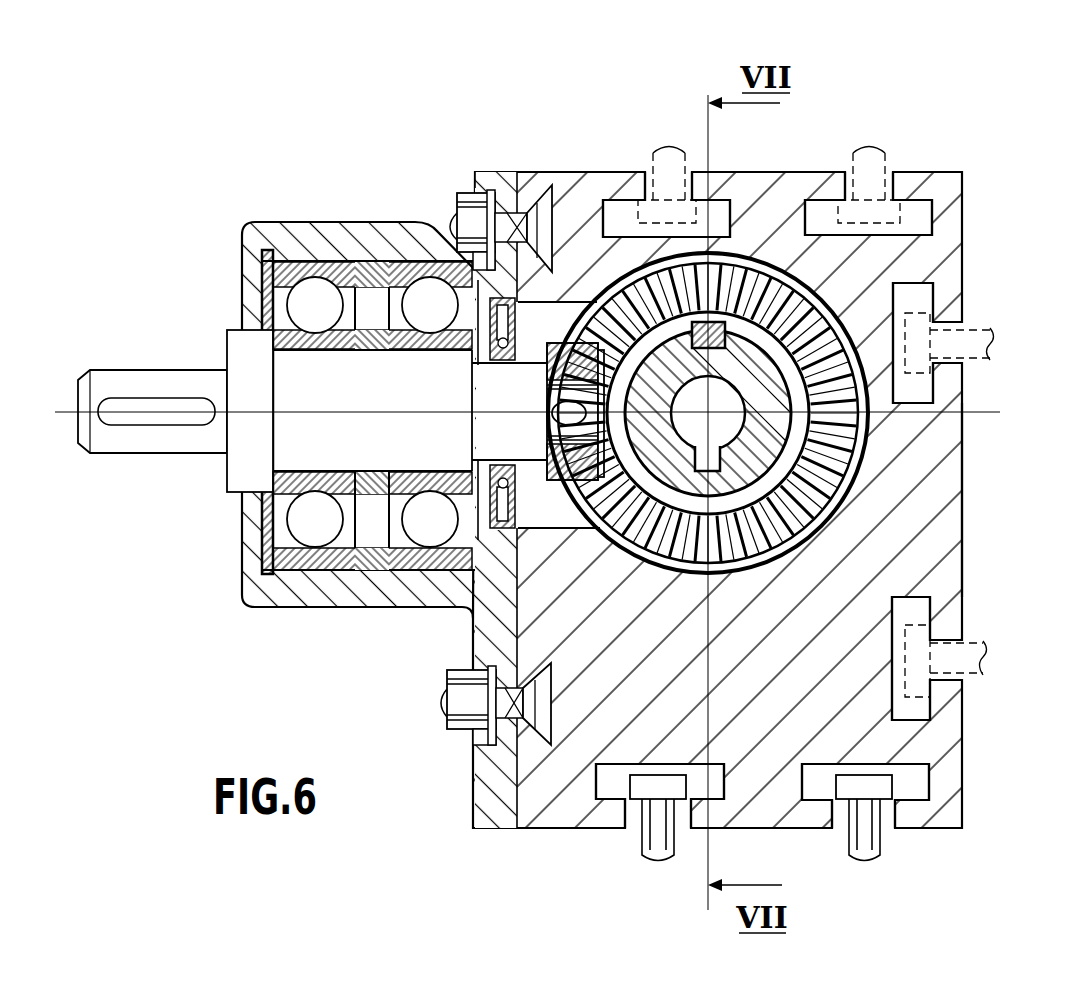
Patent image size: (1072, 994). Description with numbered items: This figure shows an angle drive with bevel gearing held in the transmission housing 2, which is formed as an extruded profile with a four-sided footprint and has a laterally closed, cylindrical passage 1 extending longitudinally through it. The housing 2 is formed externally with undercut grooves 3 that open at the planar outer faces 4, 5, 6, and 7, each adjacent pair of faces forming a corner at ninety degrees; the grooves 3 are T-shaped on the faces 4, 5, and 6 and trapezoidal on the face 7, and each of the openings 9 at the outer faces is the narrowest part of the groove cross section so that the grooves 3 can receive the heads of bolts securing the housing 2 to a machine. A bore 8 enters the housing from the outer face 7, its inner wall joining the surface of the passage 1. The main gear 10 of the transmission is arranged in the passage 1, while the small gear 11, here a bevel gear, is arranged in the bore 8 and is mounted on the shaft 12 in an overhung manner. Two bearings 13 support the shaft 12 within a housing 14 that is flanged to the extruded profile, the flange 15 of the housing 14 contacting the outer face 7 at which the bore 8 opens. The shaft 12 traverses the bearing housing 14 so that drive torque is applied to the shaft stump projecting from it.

The passage 1 is at (870, 478).
The transmission housing 2 is at (982, 141).
The grooves 3 is at (617, 205).
The outer face 4 is at (910, 172).
The outer face 5 is at (963, 545).
The outer face 6 is at (803, 830).
The outer face 7 is at (503, 830).
The bore 8 is at (558, 313).
The openings 9 is at (955, 327).
The main gear 10 is at (760, 288).
The gear 11 is at (433, 608).
The shaft 12 is at (299, 437).
The bearings 13 is at (403, 263).
The housing 14 is at (263, 224).
The flange 15 is at (500, 182).